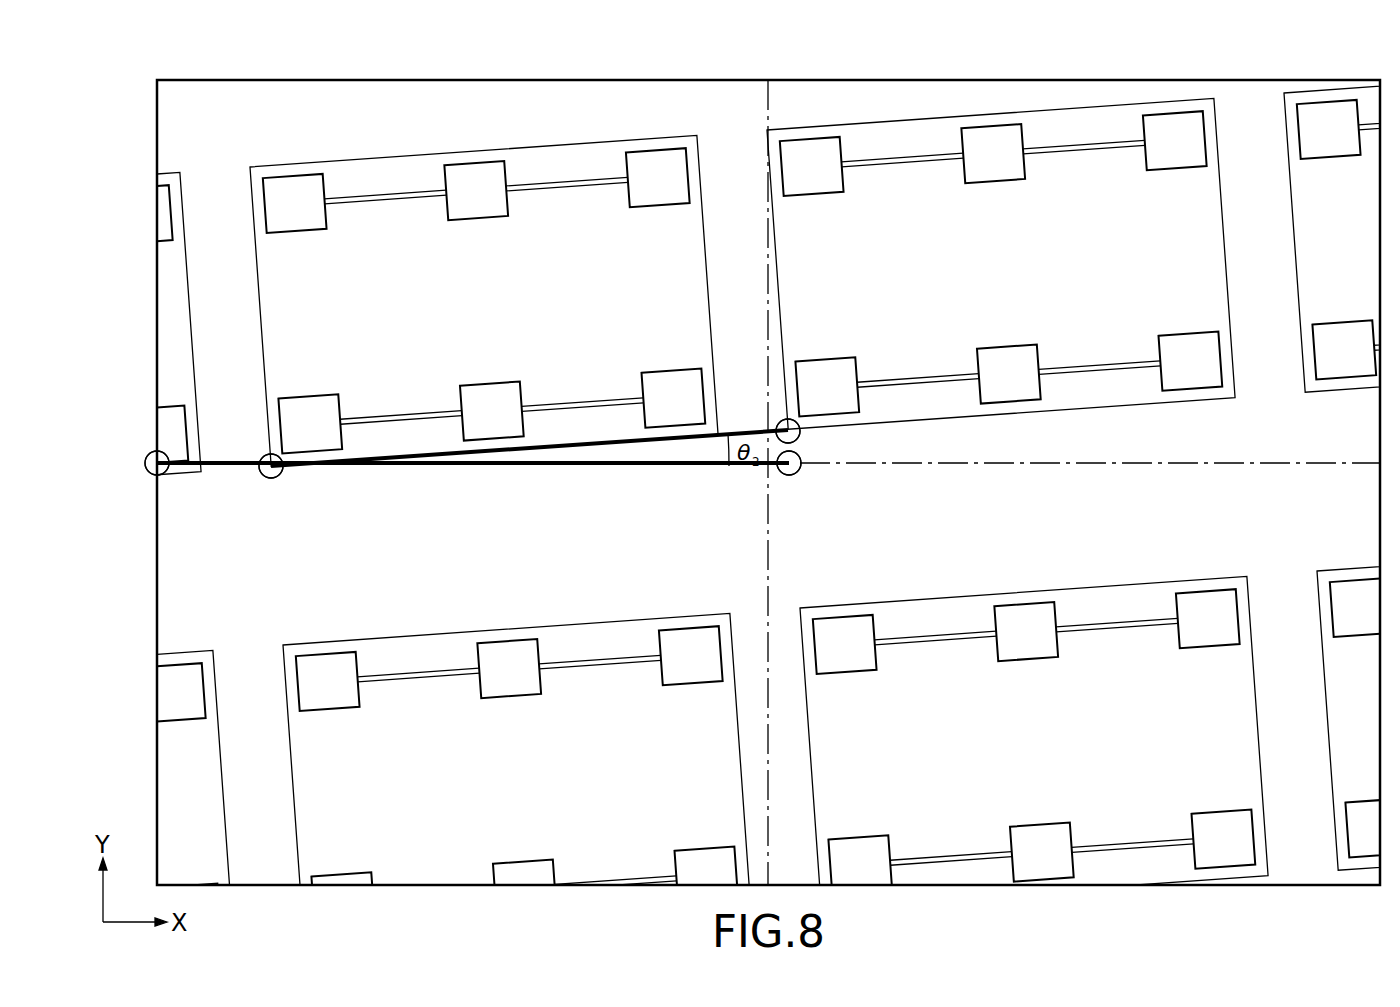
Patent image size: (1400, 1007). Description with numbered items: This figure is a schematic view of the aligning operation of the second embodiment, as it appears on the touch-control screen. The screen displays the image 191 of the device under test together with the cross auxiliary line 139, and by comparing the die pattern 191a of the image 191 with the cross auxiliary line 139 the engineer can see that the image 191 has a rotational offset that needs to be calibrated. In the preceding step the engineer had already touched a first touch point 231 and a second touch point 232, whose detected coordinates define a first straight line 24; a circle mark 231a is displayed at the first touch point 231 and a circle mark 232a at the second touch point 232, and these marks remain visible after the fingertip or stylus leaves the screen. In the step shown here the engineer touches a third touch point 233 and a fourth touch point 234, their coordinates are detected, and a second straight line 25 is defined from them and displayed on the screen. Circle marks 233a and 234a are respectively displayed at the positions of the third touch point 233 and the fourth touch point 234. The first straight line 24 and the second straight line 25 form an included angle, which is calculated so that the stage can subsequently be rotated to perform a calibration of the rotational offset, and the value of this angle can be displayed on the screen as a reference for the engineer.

The image 191 is at (157, 95).
The die pattern 191a is at (1064, 747).
The cross auxiliary line 139 is at (768, 95).
The first straight line 24 is at (472, 470).
The second straight line 25 is at (576, 450).
The first touch point 231 is at (150, 472).
The circle mark 231a is at (153, 454).
The second touch point 232 is at (802, 467).
The circle mark 232a is at (782, 473).
The third touch point 233 is at (282, 473).
The circle mark 233a is at (265, 477).
The fourth touch point 234 is at (801, 432).
The circle mark 234a is at (772, 458).